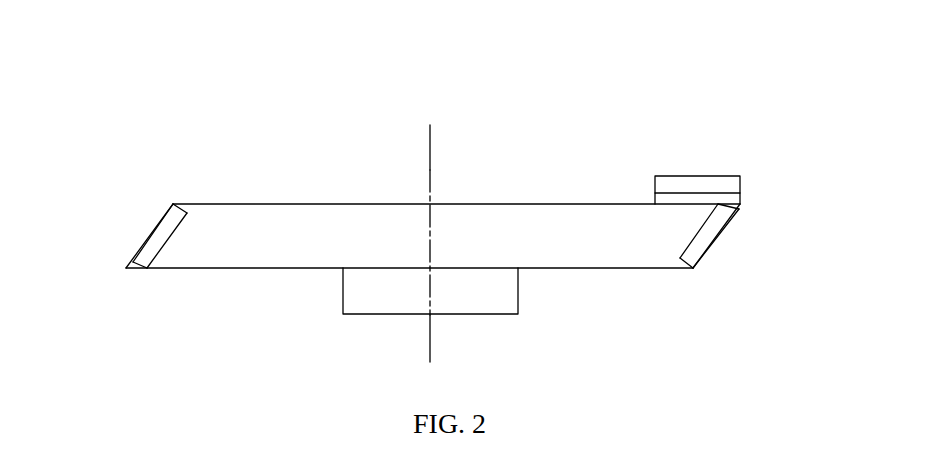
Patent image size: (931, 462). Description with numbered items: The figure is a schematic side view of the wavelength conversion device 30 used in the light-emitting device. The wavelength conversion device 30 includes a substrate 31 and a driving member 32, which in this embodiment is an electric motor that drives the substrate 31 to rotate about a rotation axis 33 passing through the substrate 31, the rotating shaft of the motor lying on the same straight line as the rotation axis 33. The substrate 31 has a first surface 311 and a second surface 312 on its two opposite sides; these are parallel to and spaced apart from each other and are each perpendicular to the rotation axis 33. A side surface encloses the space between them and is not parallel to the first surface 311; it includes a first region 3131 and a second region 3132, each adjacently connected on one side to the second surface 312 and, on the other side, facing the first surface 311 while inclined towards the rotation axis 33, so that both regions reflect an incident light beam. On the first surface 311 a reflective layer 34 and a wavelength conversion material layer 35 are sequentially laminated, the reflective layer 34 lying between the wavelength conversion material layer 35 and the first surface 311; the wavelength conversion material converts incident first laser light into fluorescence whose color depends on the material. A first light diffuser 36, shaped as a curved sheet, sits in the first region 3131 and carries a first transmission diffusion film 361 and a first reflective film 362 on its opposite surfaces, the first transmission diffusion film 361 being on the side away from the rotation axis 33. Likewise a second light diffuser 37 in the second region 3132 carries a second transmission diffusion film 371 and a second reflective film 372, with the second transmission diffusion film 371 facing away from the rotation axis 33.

The wavelength conversion device 30 is at (444, 51).
The substrate 31 is at (448, 238).
The first surface 311 is at (275, 203).
The second surface 312 is at (243, 268).
The first region 3131 is at (133, 262).
The second region 3132 is at (740, 207).
The driving member 32 is at (497, 303).
The rotation axis 33 is at (430, 162).
The reflective layer 34 is at (740, 197).
The wavelength conversion material layer 35 is at (689, 182).
The first light diffuser 36 is at (139, 266).
The first transmission diffusion film 361 is at (153, 223).
The first reflective film 362 is at (168, 245).
The second light diffuser 37 is at (717, 264).
The second transmission diffusion film 371 is at (727, 227).
The second reflective film 372 is at (700, 230).